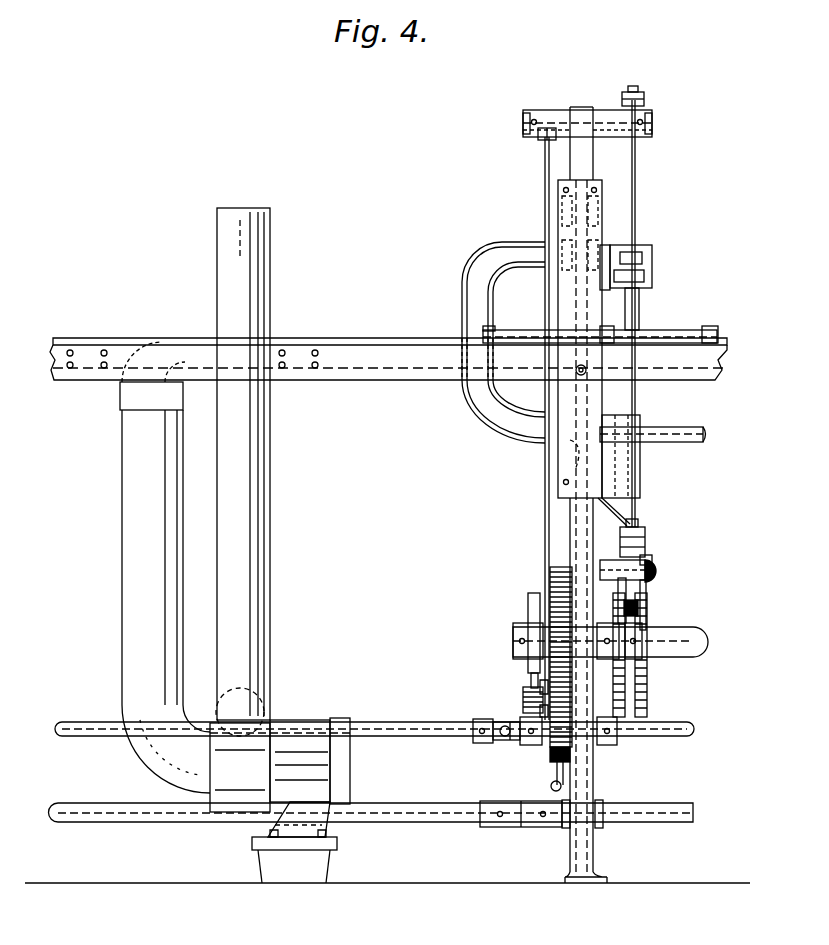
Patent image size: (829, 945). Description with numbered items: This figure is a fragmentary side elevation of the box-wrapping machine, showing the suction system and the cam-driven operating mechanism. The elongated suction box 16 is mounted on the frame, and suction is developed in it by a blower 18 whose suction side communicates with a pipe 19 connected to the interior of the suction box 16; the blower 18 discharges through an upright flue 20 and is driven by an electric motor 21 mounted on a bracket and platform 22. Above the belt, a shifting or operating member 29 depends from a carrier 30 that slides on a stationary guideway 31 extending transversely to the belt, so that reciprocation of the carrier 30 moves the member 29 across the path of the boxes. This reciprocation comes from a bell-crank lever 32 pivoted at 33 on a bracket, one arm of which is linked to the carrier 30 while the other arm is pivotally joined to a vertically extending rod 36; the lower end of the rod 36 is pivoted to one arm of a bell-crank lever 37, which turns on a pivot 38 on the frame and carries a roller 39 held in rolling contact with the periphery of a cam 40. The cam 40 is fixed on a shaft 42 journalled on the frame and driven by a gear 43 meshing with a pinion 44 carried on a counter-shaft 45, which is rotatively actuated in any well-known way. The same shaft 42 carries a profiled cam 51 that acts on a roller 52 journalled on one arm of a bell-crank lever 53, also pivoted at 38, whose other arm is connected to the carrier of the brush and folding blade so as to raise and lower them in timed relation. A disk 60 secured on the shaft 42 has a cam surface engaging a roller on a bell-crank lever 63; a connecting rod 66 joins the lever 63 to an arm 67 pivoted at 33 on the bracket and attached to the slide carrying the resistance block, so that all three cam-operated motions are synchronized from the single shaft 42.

The suction box 16 is at (318, 382).
The blower 18 is at (233, 795).
The pipe 19 is at (122, 598).
The upright flue 20 is at (270, 551).
The electric motor 21 is at (320, 722).
The bracket and platform 22 is at (332, 832).
The shifting or operating member 29 is at (680, 333).
The carrier 30 is at (653, 273).
The stationary guideway 31 is at (604, 274).
The bell-crank lever 32 is at (640, 92).
The pivot 33 is at (654, 125).
The vertically extending rod 36 is at (638, 211).
The bell-crank lever 37 is at (645, 530).
The pivot 38 is at (656, 571).
The roller 39 is at (652, 560).
The cam 40 is at (646, 602).
The shaft 42 is at (690, 636).
The gear 43 is at (550, 585).
The pinion 44 is at (550, 762).
The counter-shaft 45 is at (403, 722).
The cam 51 is at (648, 686).
The roller 52 is at (638, 612).
The bell-crank lever 53 is at (628, 596).
The disk 60 is at (528, 608).
The bell-crank lever 63 is at (528, 698).
The connecting rod 66 is at (543, 485).
The arm 67 is at (548, 110).